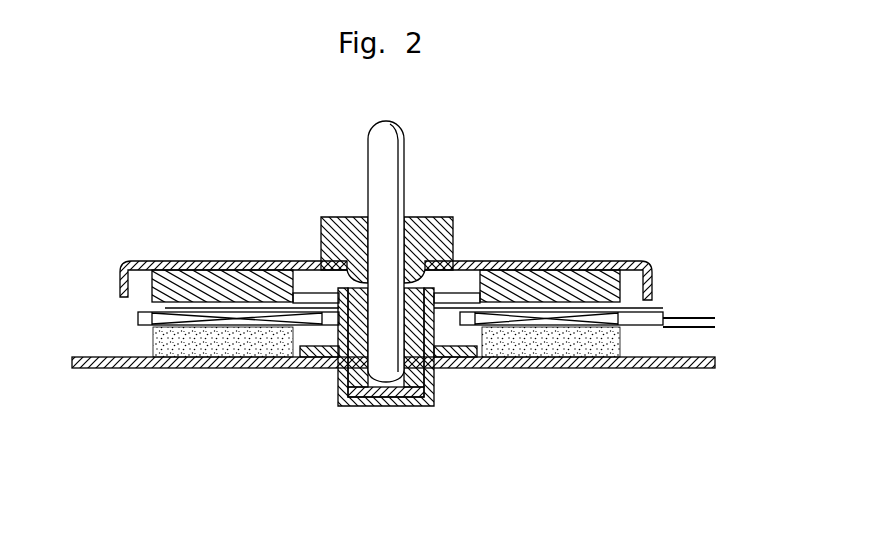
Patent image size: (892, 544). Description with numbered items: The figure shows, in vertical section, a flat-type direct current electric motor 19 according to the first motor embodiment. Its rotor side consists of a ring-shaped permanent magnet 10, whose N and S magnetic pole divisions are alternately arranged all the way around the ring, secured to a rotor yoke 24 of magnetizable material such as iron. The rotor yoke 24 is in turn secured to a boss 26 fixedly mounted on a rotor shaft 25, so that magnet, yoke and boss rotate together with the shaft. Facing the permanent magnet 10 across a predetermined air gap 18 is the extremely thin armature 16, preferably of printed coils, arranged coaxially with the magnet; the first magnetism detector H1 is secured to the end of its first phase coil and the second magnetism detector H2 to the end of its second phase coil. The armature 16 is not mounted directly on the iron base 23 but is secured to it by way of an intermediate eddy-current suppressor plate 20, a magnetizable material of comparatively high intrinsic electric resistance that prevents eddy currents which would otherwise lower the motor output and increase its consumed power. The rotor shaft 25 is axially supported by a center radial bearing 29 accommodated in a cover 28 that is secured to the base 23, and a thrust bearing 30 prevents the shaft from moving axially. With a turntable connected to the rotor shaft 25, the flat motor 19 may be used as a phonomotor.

The direct current electric motor 19 is at (315, 185).
The rotor shaft 25 is at (406, 153).
The boss 26 is at (450, 216).
The rotor yoke 24 is at (620, 261).
The permanent magnet 10 is at (151, 286).
The air gap 18 is at (165, 307).
The armature 16 is at (137, 318).
The eddy-current suppressor plate 20 is at (221, 368).
The base 23 is at (125, 368).
The center radial bearing 29 is at (339, 381).
The thrust bearing 30 is at (402, 398).
The cover 28 is at (430, 405).
The first magnetism detector H1 is at (665, 313).
The second magnetism detector H2 is at (667, 333).